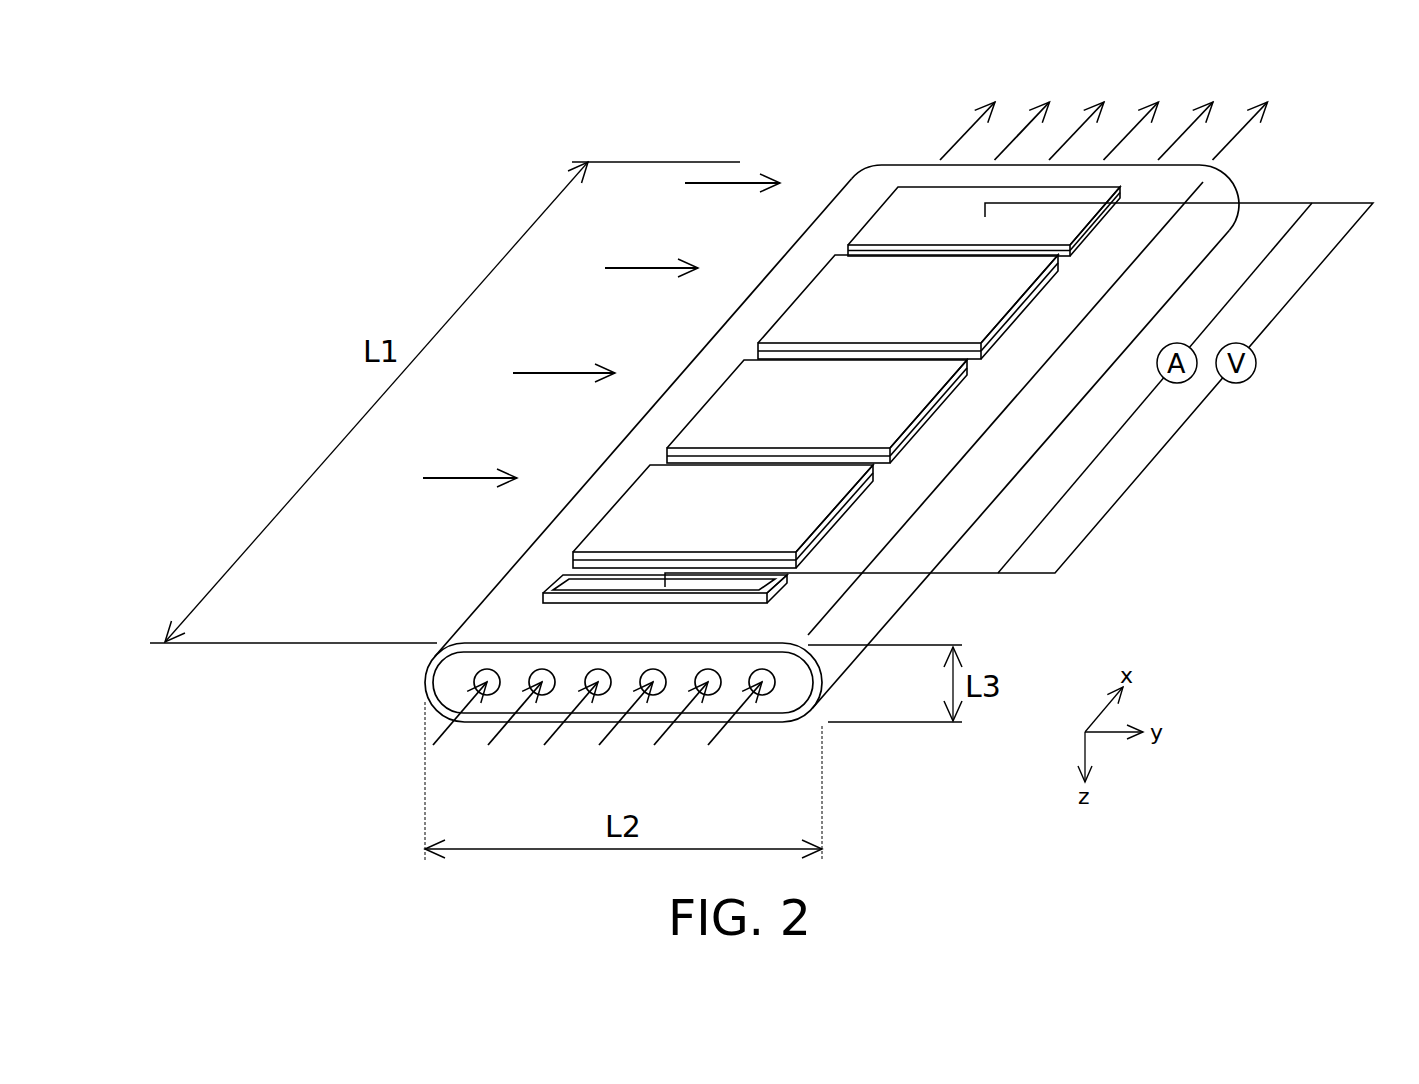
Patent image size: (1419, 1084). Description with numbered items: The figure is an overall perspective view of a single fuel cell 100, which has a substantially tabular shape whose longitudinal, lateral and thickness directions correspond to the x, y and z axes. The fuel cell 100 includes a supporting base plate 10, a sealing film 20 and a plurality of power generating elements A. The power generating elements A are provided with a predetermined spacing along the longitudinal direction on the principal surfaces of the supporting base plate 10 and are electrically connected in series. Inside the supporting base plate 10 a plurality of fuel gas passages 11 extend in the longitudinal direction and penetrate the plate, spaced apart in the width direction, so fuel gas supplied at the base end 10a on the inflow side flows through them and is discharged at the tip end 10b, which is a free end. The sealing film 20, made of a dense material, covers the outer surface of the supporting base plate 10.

The fuel cell 100 is at (517, 197).
The supporting base plate 10 is at (800, 687).
The base end 10a is at (848, 640).
The tip end 10b is at (1250, 192).
The fuel gas passage 11 is at (712, 693).
The sealing film 20 is at (768, 717).
The power generating element A is at (862, 215).